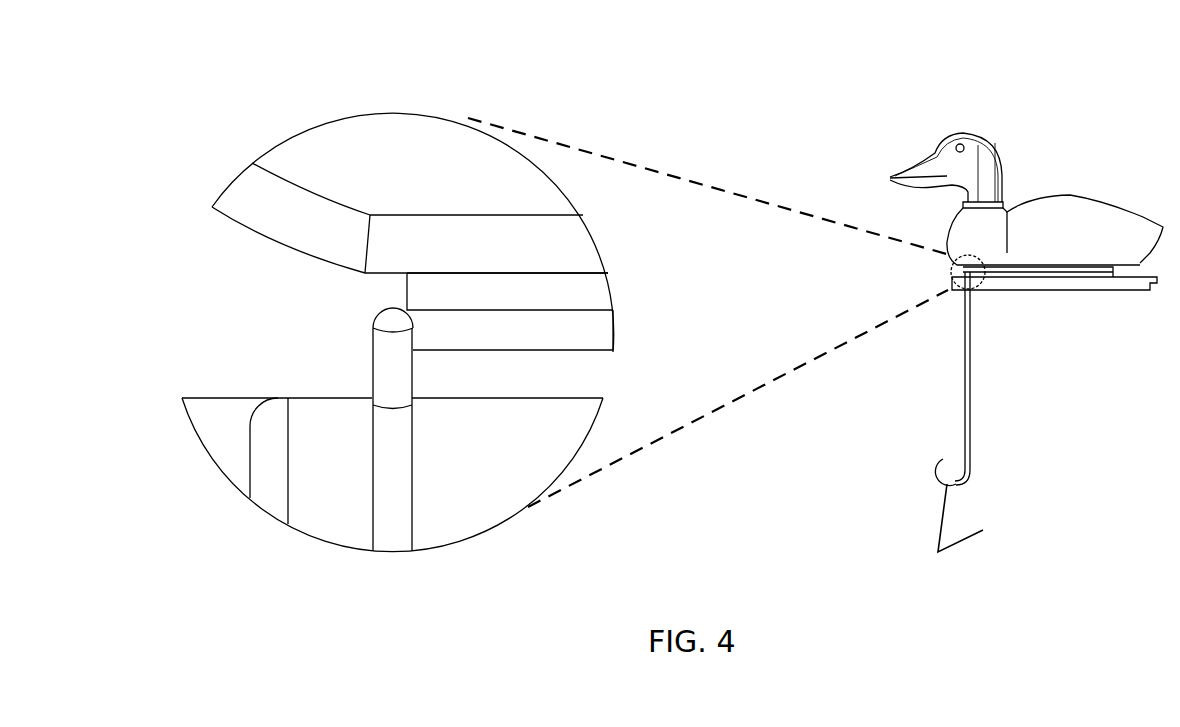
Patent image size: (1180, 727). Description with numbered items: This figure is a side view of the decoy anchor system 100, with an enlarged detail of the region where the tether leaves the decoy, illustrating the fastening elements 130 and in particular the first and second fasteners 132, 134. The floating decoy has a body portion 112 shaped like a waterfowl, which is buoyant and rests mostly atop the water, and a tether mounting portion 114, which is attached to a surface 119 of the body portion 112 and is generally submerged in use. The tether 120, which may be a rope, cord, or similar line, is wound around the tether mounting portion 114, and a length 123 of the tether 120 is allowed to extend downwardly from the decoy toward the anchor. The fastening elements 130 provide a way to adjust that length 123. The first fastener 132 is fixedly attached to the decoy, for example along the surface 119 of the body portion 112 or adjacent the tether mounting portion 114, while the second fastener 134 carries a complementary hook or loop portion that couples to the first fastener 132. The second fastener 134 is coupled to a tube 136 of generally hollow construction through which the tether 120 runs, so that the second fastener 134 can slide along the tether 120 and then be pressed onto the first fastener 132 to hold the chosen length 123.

The decoy anchor system 100 is at (993, 108).
The body portion 112 is at (377, 145).
The tether mounting portion 114 is at (305, 523).
The surface 119 is at (585, 272).
The tether 120 is at (395, 390).
The length 123 is at (983, 270).
The fastening elements 130 is at (630, 312).
The first fastener 132 is at (575, 298).
The second fastener 134 is at (585, 335).
The tube 136 is at (373, 318).